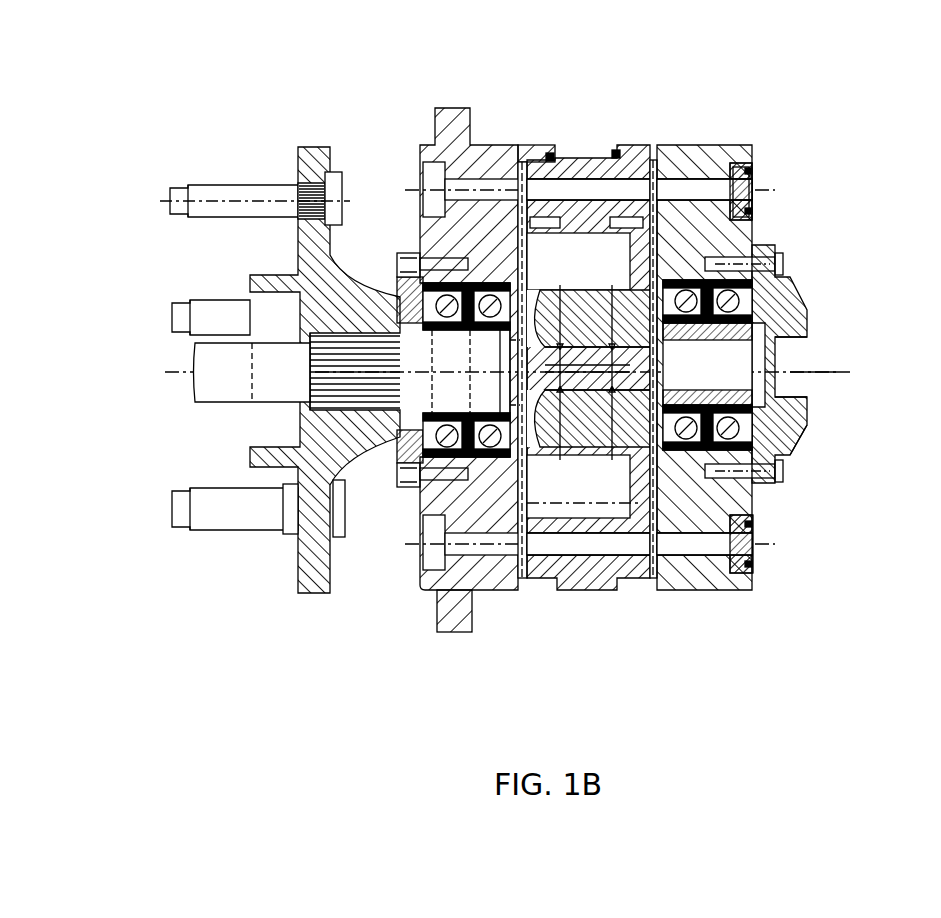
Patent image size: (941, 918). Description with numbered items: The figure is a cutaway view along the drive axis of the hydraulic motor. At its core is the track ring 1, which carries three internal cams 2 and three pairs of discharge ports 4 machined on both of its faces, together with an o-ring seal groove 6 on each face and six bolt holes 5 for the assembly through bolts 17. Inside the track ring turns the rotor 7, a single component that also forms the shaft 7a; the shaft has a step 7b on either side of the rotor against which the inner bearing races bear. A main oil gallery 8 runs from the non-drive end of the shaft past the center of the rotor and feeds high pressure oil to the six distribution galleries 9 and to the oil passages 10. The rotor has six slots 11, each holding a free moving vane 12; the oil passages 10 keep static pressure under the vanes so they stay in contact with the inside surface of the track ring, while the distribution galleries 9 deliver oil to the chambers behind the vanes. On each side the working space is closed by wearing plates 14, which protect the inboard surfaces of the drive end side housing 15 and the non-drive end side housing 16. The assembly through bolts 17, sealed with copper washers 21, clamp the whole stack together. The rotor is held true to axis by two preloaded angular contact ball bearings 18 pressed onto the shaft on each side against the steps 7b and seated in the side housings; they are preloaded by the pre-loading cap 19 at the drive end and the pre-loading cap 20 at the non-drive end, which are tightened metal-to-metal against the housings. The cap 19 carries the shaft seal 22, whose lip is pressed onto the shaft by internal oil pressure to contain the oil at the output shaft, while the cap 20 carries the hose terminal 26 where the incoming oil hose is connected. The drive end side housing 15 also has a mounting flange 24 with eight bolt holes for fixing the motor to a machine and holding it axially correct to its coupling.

The track ring 1 is at (587, 167).
The internal cams 2 is at (597, 223).
The discharge ports 4 is at (620, 223).
The bolt holes 5 is at (555, 218).
The o-ring seal groove 6 is at (640, 160).
The rotor 7 is at (490, 210).
The shaft 7a is at (452, 390).
The step 7b is at (508, 450).
The main oil gallery 8 is at (773, 308).
The distribution galleries 9 is at (615, 372).
The oil passages 10 is at (652, 240).
The slots 11 is at (455, 497).
The vane 12 is at (708, 257).
The wearing plates 14 is at (517, 277).
The drive end side housing 15 is at (432, 157).
The non-drive end side housing 16 is at (723, 145).
The assembly through bolt 17 is at (745, 187).
The angular contact ball bearings 18 is at (777, 445).
The pre-loading cap 19 is at (400, 255).
The pre-loading cap 20 is at (807, 412).
The copper washers 21 is at (753, 162).
The shaft seal 22 is at (400, 287).
The flange 24 is at (457, 608).
The hose terminal 26 is at (797, 350).